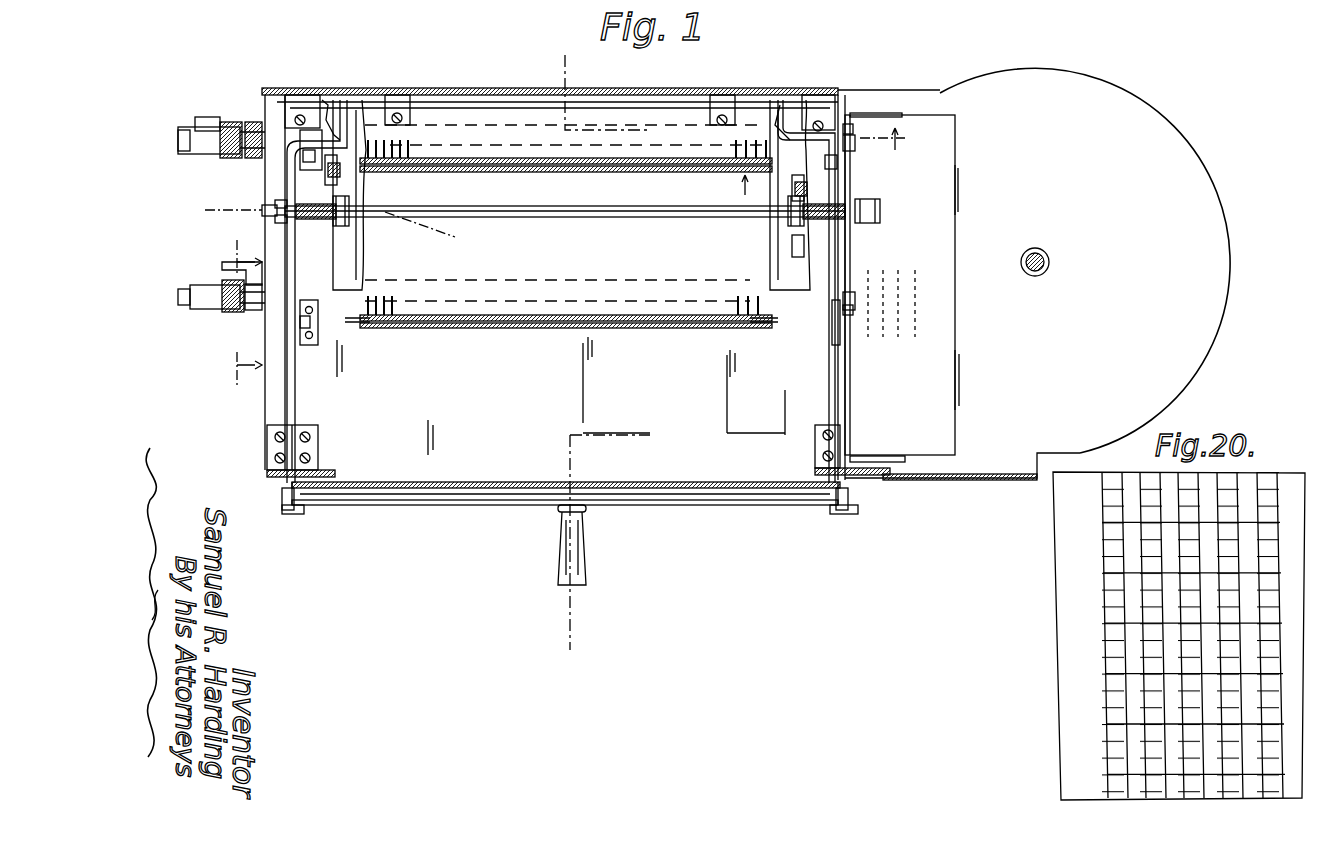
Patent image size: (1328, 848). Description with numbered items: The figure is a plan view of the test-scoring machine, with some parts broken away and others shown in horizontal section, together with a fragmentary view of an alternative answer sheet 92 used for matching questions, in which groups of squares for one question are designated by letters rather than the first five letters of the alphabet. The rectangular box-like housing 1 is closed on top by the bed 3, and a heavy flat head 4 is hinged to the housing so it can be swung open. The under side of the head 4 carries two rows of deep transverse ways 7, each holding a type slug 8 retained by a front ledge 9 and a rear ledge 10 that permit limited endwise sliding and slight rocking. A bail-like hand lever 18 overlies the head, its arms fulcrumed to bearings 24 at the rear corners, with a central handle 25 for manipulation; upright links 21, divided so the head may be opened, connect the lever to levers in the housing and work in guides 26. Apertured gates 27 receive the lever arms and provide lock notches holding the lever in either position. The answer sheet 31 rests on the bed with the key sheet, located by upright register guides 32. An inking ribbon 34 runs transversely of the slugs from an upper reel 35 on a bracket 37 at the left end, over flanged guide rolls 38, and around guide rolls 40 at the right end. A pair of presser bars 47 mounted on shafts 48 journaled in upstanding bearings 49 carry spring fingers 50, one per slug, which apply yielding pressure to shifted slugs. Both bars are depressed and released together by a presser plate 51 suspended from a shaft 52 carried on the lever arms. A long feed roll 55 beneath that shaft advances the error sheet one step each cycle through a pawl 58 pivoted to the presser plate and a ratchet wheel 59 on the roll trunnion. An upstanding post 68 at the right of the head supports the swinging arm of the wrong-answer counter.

In FIG. 1, the housing 1 is at (932, 478).
In FIG. 1, the bed 3 is at (561, 352).
In FIG. 1, the head 4 is at (628, 96).
In FIG. 1, the ways 7 is at (246, 311).
In FIG. 1, the type slug 8 is at (818, 162).
In FIG. 1, the front ledge 9 is at (326, 223).
In FIG. 1, the rear ledge 10 is at (400, 98).
In FIG. 1, the hand lever 18 is at (286, 406).
In FIG. 1, the links 21 is at (284, 503).
In FIG. 1, the bearings 24 is at (295, 95).
In FIG. 1, the handle 25 is at (578, 545).
In FIG. 1, the guides 26 is at (290, 514).
In FIG. 1, the gates 27 is at (335, 472).
In FIG. 1, the answer sheet 31 is at (955, 226).
In FIG. 1, the register guides 32 is at (885, 115).
In FIG. 1, the inking ribbon 34 is at (235, 158).
In FIG. 1, the upper reel 35 is at (200, 154).
In FIG. 1, the bracket 37 is at (215, 120).
In FIG. 1, the guide rolls 38 is at (250, 122).
In FIG. 1, the guide rolls 40 is at (853, 126).
In FIG. 1, the presser bars 47 is at (322, 110).
In FIG. 1, the shafts 48 is at (620, 168).
In FIG. 1, the bearings 49 is at (300, 180).
In FIG. 1, the spring fingers 50 is at (400, 148).
In FIG. 1, the presser plate 51 is at (365, 242).
In FIG. 1, the shaft 52 is at (690, 217).
In FIG. 1, the feed roll 55 is at (338, 178).
In FIG. 1, the pawl 58 is at (270, 208).
In FIG. 1, the ratchet wheel 59 is at (298, 220).
In FIG. 1, the post 68 is at (1049, 260).
In FIG. 20, the answer sheet 92 is at (1055, 677).